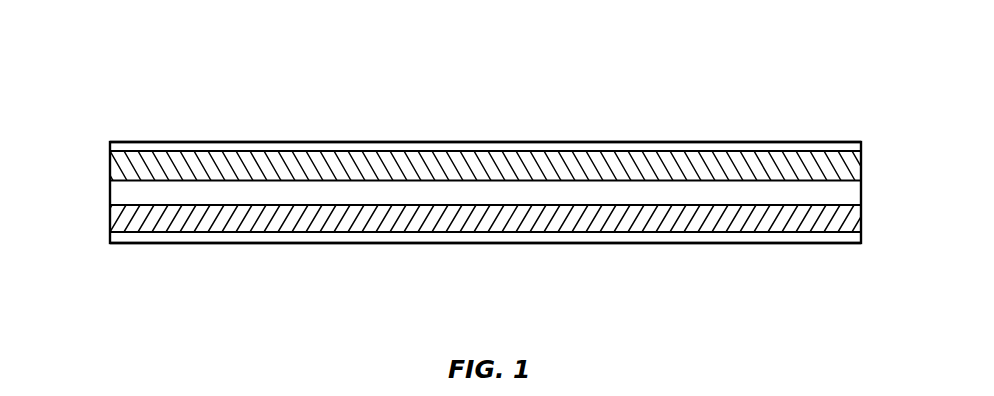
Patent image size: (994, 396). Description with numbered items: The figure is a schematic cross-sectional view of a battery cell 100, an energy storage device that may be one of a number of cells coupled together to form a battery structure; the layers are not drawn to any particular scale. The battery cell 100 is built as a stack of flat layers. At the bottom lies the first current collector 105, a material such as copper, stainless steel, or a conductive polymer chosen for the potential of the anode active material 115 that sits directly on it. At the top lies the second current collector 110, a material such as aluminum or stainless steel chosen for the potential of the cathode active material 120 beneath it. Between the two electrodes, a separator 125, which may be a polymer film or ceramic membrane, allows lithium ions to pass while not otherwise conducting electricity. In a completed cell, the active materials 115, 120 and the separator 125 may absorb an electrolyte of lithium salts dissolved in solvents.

The battery cell 100 is at (237, 79).
The first current collector 105 is at (318, 243).
The second current collector 110 is at (712, 141).
The anode active material 115 is at (109, 211).
The cathode active material 120 is at (862, 163).
The separator 125 is at (862, 198).